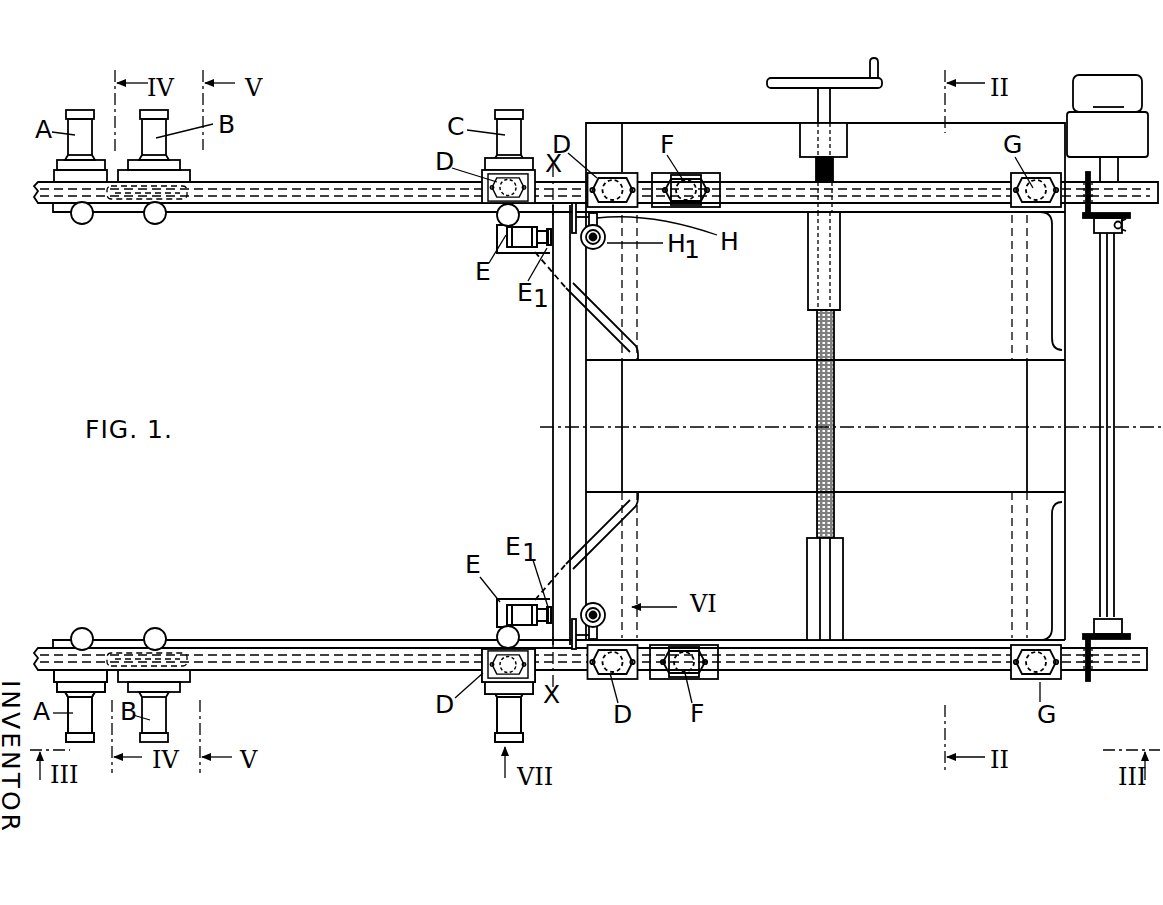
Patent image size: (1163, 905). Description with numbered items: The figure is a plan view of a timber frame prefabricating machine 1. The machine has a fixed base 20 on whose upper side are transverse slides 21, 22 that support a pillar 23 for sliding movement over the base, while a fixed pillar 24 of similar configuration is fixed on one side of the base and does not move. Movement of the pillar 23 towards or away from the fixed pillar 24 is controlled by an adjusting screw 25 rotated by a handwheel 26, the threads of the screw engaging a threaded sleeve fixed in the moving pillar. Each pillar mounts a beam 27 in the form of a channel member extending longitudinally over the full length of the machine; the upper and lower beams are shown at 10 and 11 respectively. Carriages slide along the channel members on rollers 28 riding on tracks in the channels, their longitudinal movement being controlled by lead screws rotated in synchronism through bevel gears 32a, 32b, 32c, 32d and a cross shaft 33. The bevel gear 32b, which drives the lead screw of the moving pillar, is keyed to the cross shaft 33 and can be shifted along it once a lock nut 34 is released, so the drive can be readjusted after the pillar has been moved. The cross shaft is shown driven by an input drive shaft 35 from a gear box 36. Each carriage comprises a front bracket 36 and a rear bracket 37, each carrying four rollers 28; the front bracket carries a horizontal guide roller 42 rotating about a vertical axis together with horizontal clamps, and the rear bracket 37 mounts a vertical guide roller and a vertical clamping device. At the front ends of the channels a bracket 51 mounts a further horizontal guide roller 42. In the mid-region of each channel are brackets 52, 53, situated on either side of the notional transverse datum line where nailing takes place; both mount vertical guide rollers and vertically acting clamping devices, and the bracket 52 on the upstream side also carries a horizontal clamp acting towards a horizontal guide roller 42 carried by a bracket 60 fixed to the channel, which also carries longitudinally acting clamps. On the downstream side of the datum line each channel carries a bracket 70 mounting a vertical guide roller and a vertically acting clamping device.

The upright post 1 is at (560, 354).
The upper guide bar 10 is at (47, 193).
The lower guide bar 11 is at (42, 657).
The fixed base 20 is at (951, 460).
The transverse slide 21 is at (608, 473).
The transverse slide 22 is at (1037, 460).
The pillar 23 is at (695, 333).
The fixed pillar 24 is at (750, 512).
The adjusting screw 25 is at (836, 470).
The handwheel 26 is at (767, 83).
The beam 27 is at (330, 183).
The rollers 28 is at (173, 193).
The bevel gear 32a is at (1087, 185).
The bevel gear 32b is at (1095, 224).
The bevel gear 32c is at (1090, 677).
The bevel gear 32d is at (1090, 632).
The cross shaft 33 is at (1107, 548).
The lock nut 34 is at (1122, 229).
The input drive shaft 35 is at (1112, 170).
The gear box 36 is at (182, 678).
The rear bracket 37 is at (718, 680).
The horizontal guide roller 42 is at (155, 216).
The bracket 51 is at (65, 672).
The bracket 52 is at (528, 682).
The bracket 53 is at (590, 677).
The bracket 60 is at (498, 240).
The bracket 70 is at (1017, 182).